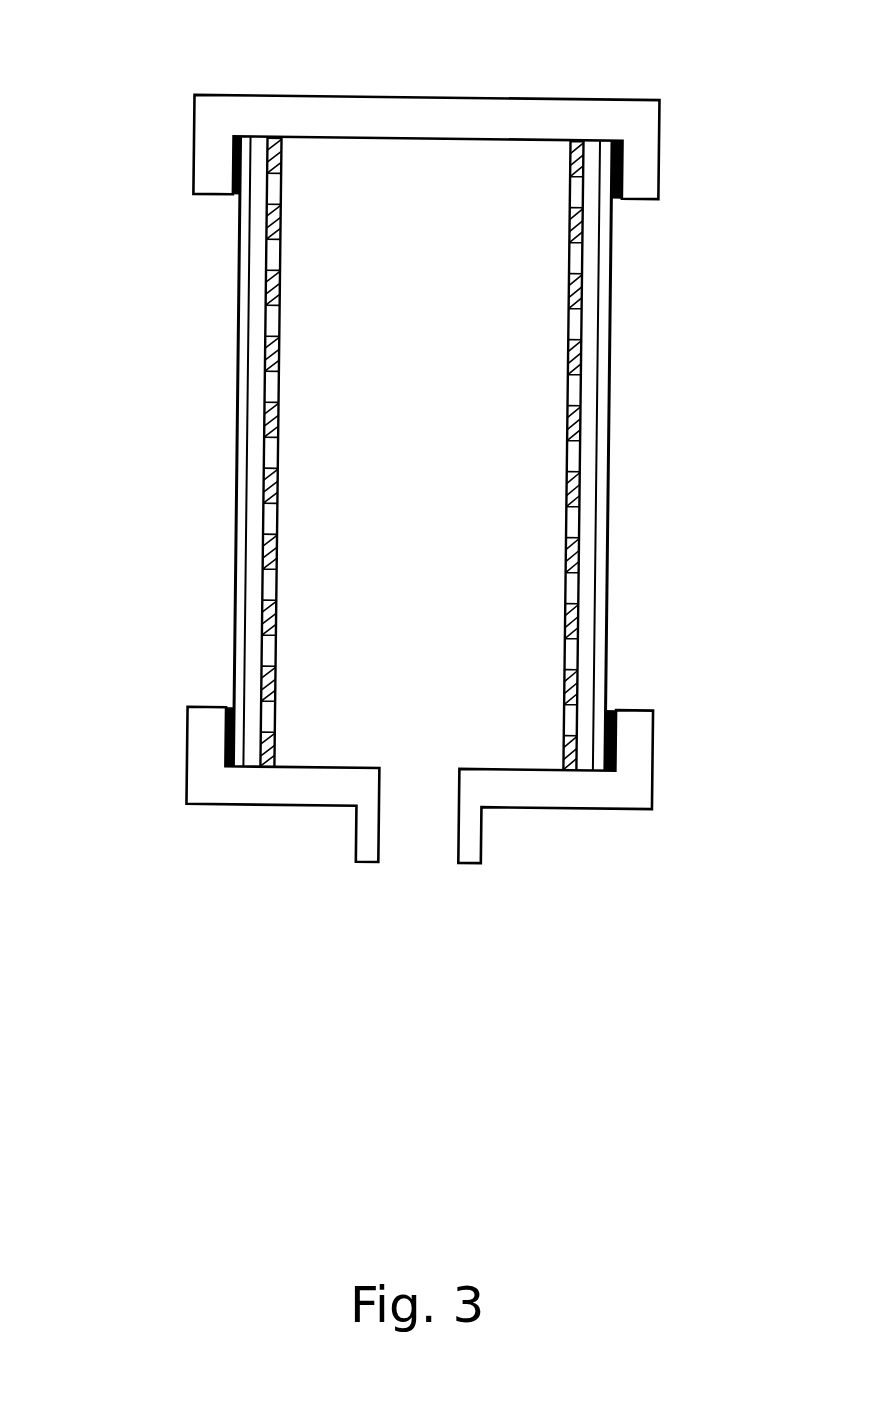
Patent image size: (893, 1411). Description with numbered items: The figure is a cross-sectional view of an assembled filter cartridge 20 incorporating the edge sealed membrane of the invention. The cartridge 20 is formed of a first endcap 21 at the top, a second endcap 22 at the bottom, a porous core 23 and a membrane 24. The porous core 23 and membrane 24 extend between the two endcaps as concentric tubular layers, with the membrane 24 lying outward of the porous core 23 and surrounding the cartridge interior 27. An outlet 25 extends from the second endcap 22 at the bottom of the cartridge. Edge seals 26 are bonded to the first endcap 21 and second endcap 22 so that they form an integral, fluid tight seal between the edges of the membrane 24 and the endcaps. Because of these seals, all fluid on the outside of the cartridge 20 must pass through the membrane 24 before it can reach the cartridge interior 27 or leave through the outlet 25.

The cartridge 20 is at (210, 463).
The first endcap 21 is at (420, 112).
The second endcap 22 is at (195, 759).
The porous core 23 is at (277, 490).
The membrane 24 is at (602, 415).
The outlet 25 is at (421, 850).
The edge seals 26 is at (608, 715).
The cartridge interior 27 is at (457, 452).